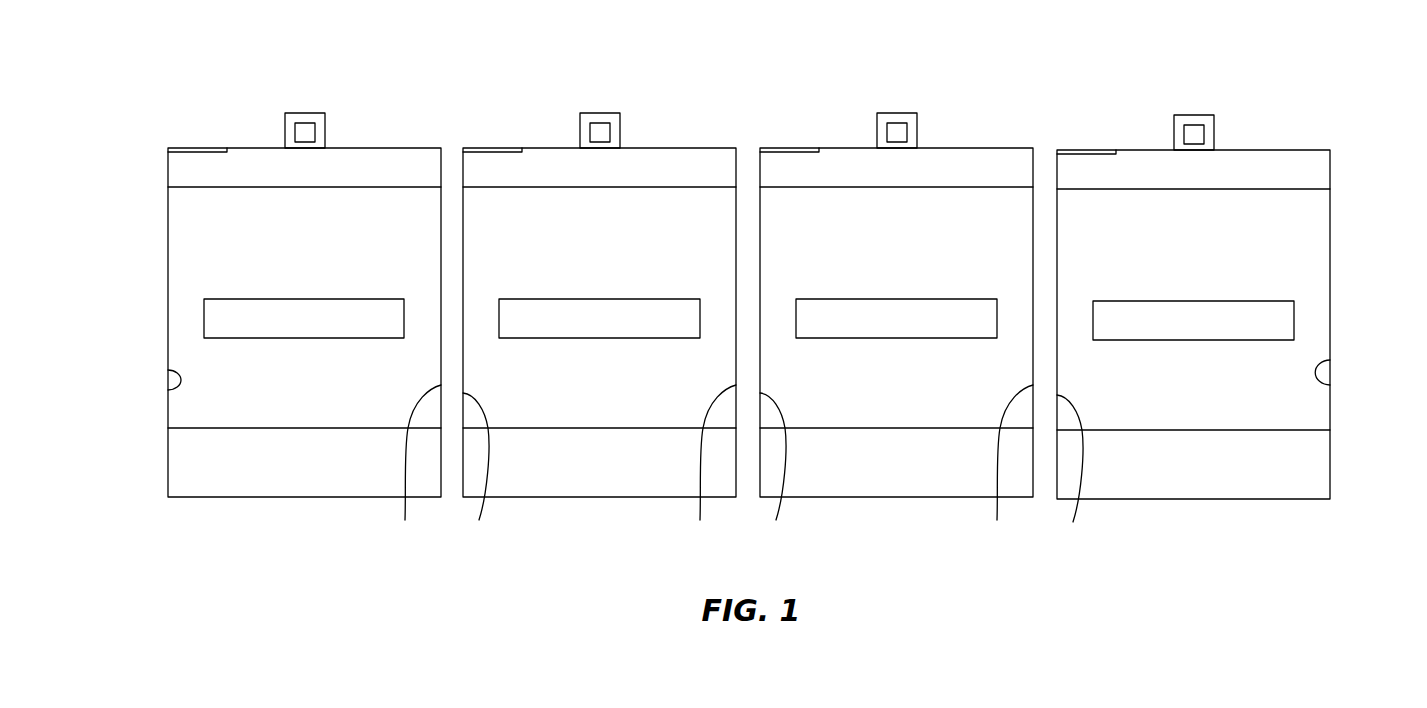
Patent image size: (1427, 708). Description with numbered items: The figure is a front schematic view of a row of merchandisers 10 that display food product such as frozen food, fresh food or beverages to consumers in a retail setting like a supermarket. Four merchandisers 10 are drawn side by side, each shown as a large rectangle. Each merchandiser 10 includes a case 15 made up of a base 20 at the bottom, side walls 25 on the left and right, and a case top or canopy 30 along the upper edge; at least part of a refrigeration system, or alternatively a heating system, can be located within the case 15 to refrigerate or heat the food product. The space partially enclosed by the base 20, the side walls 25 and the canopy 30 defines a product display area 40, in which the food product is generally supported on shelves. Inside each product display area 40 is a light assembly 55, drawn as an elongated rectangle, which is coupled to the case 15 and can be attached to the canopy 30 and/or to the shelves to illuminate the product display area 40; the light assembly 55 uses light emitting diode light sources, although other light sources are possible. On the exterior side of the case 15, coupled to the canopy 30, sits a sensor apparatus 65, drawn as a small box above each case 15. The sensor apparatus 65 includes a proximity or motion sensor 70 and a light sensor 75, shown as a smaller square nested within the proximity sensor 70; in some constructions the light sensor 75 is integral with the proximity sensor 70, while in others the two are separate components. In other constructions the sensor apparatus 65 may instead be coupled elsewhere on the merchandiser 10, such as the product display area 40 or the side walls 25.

The merchandiser 10 is at (234, 116).
The case 15 is at (168, 148).
The base 20 is at (218, 478).
The side walls 25 is at (168, 390).
The canopy 30 is at (385, 158).
The product display area 40 is at (206, 256).
The light assembly 55 is at (204, 316).
The sensor apparatus 65 is at (305, 96).
The proximity sensor 70 is at (285, 113).
The light sensor 75 is at (307, 123).